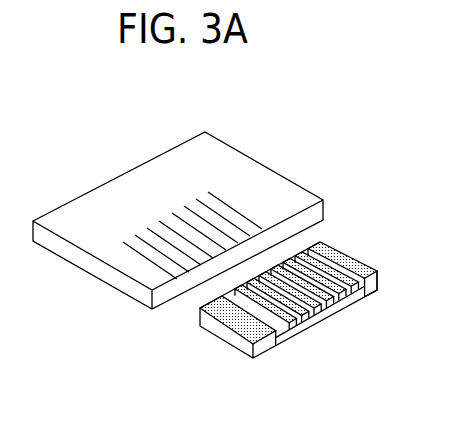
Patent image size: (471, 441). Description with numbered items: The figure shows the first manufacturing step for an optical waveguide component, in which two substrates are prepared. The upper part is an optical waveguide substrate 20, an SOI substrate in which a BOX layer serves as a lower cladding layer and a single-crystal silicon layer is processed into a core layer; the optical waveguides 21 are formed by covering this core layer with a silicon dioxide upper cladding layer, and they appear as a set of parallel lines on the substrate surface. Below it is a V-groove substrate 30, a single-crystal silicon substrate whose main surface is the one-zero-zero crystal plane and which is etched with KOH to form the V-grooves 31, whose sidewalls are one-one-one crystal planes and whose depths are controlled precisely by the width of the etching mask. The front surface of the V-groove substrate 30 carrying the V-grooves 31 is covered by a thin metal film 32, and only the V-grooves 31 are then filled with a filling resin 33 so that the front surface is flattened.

The optical waveguide substrate 20 is at (208, 188).
The optical waveguides 21 is at (237, 210).
The V-groove substrate 30 is at (308, 314).
The V-grooves 31 is at (326, 301).
The thin metal film 32 is at (353, 248).
The filling resin 33 is at (376, 285).